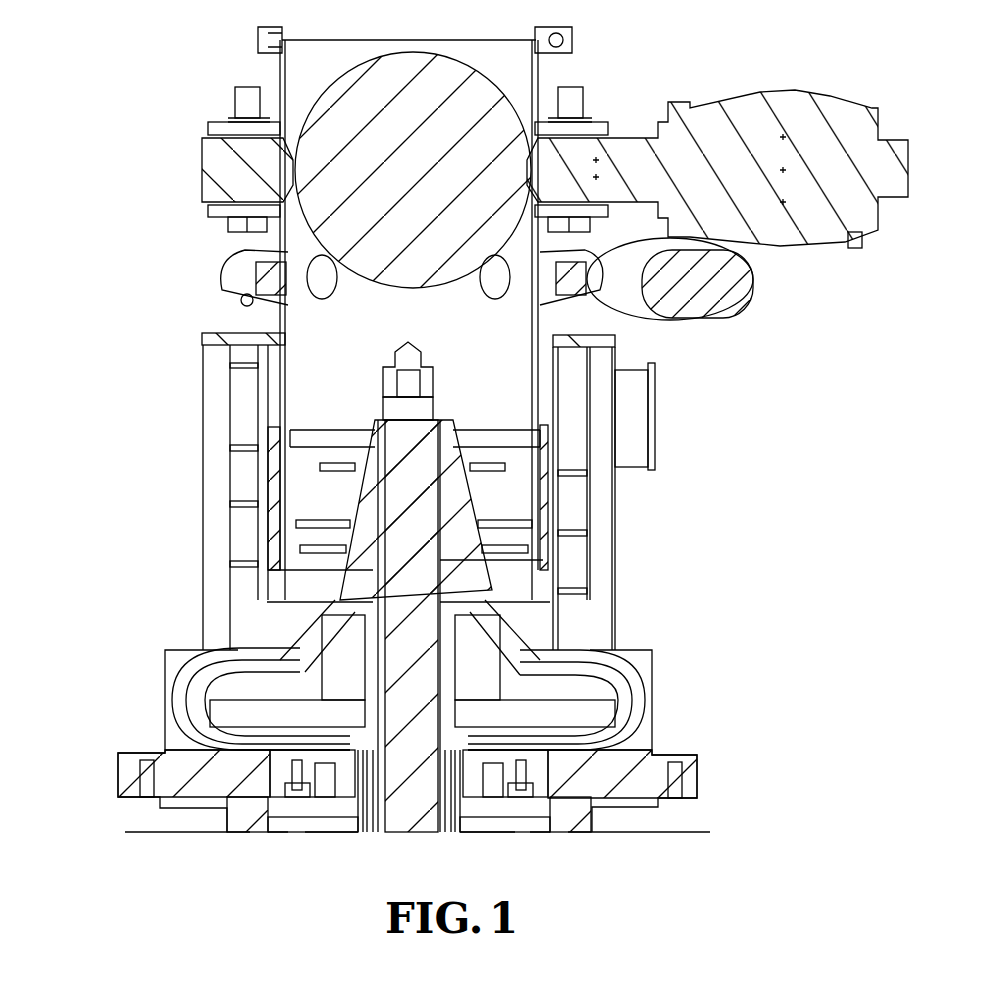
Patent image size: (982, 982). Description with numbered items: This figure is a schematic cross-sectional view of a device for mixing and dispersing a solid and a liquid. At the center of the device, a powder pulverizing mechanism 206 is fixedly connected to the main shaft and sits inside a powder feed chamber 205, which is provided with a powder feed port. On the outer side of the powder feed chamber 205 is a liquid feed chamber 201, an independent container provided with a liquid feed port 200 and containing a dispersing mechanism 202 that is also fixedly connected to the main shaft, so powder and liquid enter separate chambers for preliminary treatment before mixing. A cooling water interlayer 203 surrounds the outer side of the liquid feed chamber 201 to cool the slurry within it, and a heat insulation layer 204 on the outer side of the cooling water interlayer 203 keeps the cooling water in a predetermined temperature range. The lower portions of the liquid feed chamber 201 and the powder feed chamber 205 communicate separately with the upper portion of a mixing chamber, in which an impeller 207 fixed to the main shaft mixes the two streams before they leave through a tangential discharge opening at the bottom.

The liquid feed port 200 is at (657, 395).
The liquid feed chamber 201 is at (273, 393).
The dispersing mechanism 202 is at (543, 517).
The cooling water interlayer 203 is at (240, 433).
The heat insulation layer 204 is at (213, 547).
The powder feed chamber 205 is at (503, 347).
The powder pulverizing mechanism 206 is at (483, 460).
The impeller 207 is at (547, 697).